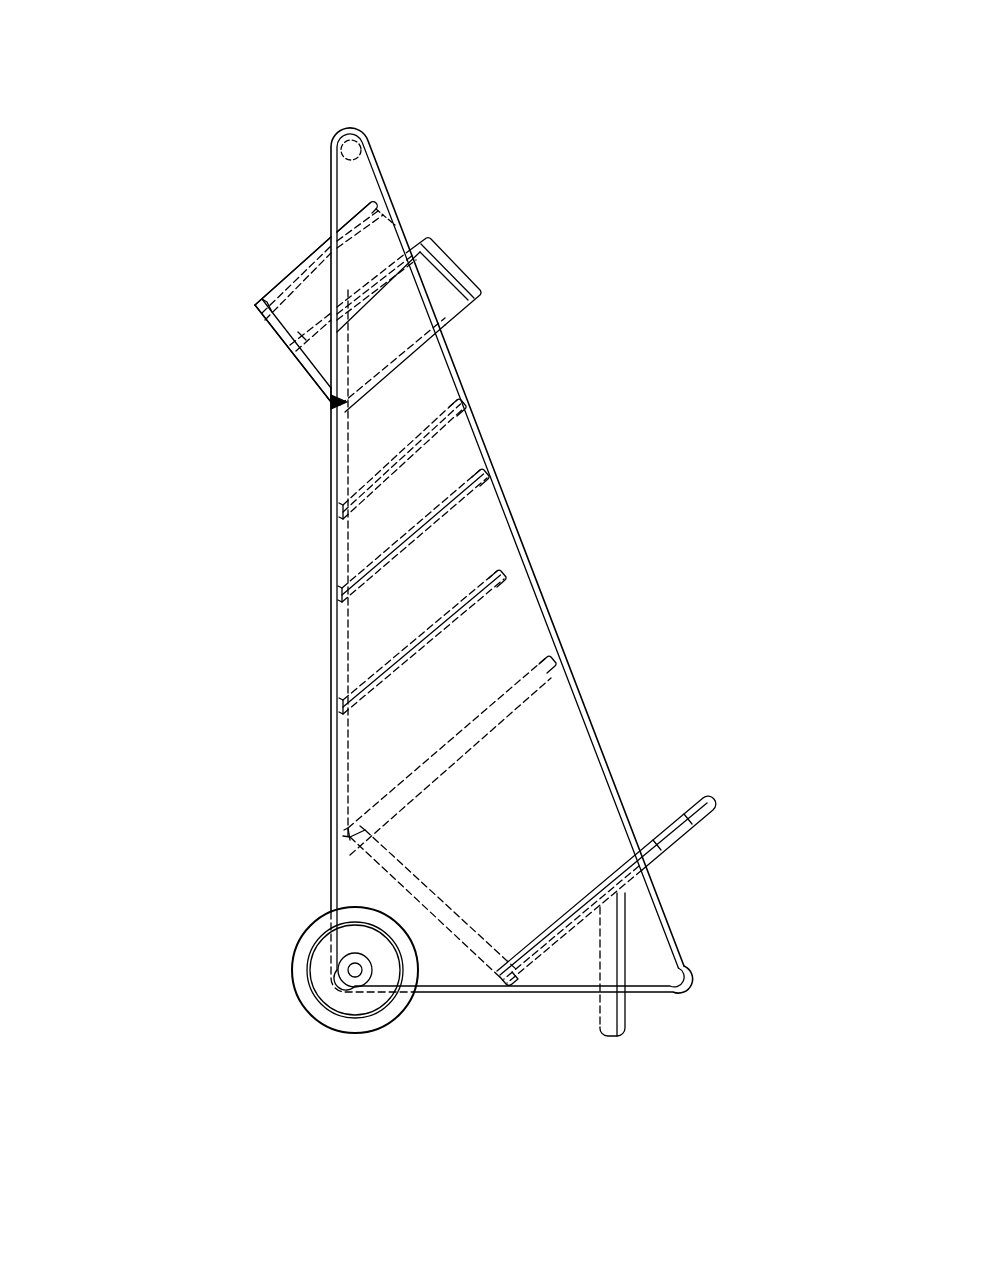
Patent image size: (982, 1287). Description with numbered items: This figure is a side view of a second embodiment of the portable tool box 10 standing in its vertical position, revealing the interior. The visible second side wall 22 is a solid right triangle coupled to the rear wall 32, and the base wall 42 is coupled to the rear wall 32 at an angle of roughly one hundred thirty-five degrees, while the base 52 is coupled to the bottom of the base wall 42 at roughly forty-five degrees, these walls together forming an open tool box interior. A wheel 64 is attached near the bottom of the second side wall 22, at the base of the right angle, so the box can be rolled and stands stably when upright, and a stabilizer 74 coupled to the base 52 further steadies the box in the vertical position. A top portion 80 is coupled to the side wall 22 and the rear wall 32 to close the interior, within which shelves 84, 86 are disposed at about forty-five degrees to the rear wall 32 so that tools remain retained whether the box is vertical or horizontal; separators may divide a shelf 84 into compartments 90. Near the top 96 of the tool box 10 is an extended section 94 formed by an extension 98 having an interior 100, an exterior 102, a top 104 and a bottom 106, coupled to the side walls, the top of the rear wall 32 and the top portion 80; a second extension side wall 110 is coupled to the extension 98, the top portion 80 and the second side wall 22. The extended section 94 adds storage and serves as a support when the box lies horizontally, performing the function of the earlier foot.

The portable tool box 10 is at (630, 122).
The second side wall 22 is at (653, 957).
The rear wall 32 is at (340, 672).
The base wall 42 is at (387, 883).
The base 52 is at (677, 840).
The wheel 64 is at (340, 1012).
The stabilizer 74 is at (627, 1023).
The top portion 80 is at (316, 300).
The shelf 84 is at (492, 478).
The shelf 86 is at (547, 672).
The compartment 90 is at (445, 286).
The extended section 94 is at (247, 257).
The top 96 is at (355, 118).
The extension 98 is at (338, 390).
The interior 100 is at (305, 333).
The exterior 102 is at (266, 343).
The top 104 is at (257, 312).
The bottom 106 is at (334, 402).
The second extension side wall 110 is at (308, 300).